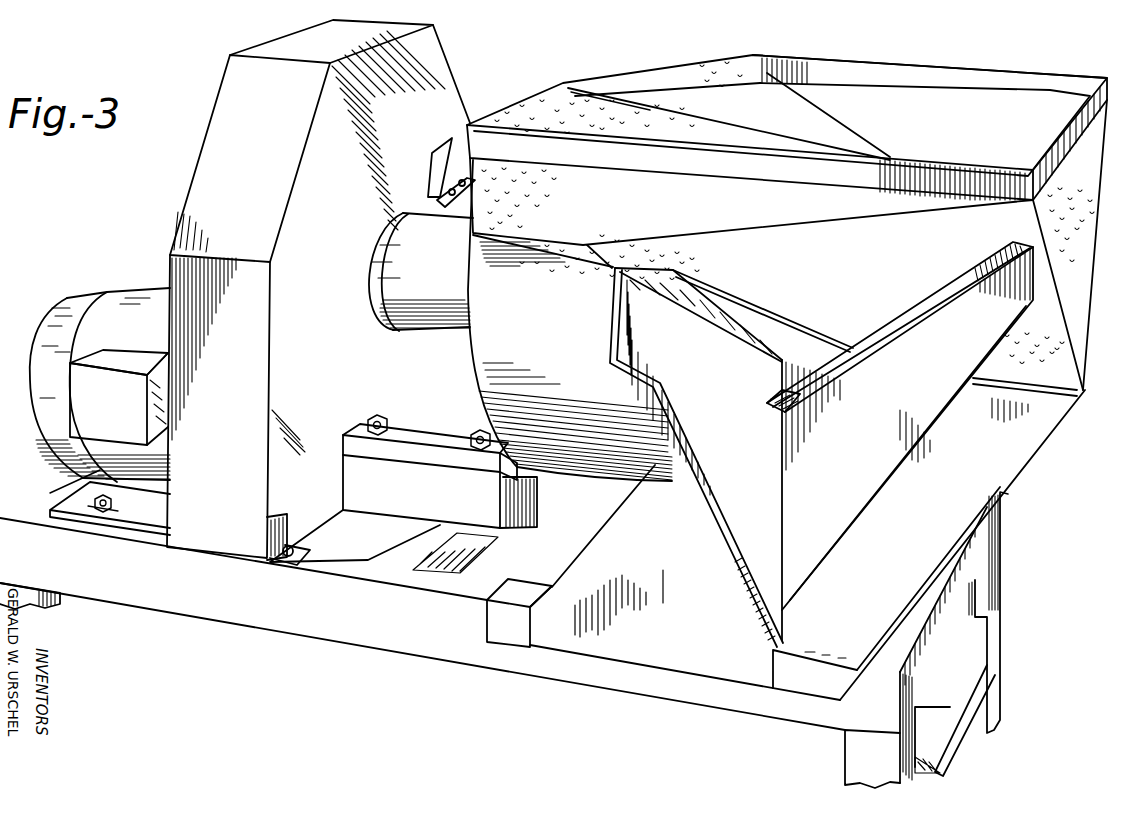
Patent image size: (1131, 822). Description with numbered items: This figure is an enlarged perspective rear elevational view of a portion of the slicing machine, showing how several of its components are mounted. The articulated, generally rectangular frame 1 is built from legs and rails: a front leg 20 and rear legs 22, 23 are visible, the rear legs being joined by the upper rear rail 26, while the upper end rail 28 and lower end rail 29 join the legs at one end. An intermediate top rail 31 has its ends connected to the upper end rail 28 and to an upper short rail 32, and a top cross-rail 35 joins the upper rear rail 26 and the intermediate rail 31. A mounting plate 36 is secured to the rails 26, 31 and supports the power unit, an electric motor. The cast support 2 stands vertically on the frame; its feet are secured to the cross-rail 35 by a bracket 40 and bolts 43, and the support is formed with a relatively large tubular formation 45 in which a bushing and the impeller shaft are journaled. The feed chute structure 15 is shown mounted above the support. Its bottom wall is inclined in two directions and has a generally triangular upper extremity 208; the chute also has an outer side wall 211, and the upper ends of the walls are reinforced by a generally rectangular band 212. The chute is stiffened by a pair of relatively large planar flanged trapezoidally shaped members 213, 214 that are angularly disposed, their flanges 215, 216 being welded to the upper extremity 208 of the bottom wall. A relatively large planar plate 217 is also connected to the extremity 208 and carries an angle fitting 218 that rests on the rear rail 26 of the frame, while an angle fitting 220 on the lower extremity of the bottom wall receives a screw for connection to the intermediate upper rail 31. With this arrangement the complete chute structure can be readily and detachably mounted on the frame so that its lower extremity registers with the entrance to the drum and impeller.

The frame 1 is at (1008, 530).
The support 2 is at (403, 388).
The feed chute structure 15 is at (118, 295).
The front leg 20 is at (993, 692).
The rear leg 22 is at (857, 750).
The rear leg 23 is at (58, 593).
The upper rear rail 26 is at (267, 610).
The upper end rail 28 is at (62, 486).
The lower end rail 29 is at (948, 745).
The intermediate top rail 31 is at (597, 507).
The upper short rail 32 is at (965, 564).
The top cross-rail 35 is at (410, 548).
The mounting plate 36 is at (75, 482).
The bracket 40 is at (356, 484).
The bolts 43 is at (474, 434).
The tubular formation 45 is at (386, 244).
The upper extremity of the bottom wall 208 is at (883, 228).
The outer side wall 211 is at (1086, 168).
The rectangular band 212 is at (997, 71).
The flanged trapezoidal member 213 is at (730, 494).
The flanged trapezoidal member 214 is at (913, 423).
The flange 215 is at (760, 333).
The flange 216 is at (912, 322).
The planar plate 217 is at (608, 560).
The angle fitting 218 is at (492, 625).
The angle fitting 220 is at (615, 104).